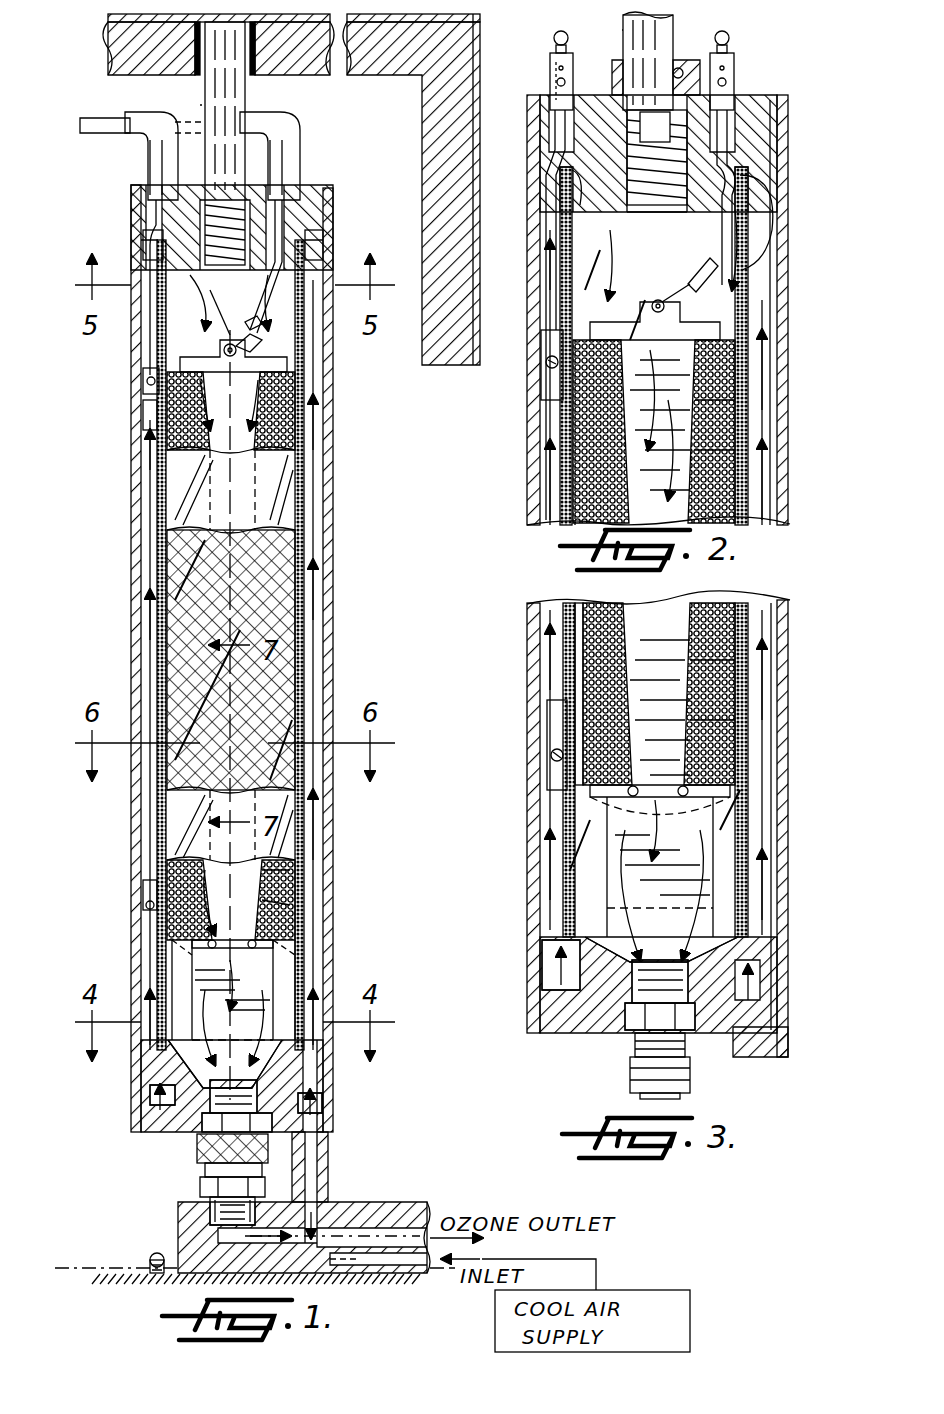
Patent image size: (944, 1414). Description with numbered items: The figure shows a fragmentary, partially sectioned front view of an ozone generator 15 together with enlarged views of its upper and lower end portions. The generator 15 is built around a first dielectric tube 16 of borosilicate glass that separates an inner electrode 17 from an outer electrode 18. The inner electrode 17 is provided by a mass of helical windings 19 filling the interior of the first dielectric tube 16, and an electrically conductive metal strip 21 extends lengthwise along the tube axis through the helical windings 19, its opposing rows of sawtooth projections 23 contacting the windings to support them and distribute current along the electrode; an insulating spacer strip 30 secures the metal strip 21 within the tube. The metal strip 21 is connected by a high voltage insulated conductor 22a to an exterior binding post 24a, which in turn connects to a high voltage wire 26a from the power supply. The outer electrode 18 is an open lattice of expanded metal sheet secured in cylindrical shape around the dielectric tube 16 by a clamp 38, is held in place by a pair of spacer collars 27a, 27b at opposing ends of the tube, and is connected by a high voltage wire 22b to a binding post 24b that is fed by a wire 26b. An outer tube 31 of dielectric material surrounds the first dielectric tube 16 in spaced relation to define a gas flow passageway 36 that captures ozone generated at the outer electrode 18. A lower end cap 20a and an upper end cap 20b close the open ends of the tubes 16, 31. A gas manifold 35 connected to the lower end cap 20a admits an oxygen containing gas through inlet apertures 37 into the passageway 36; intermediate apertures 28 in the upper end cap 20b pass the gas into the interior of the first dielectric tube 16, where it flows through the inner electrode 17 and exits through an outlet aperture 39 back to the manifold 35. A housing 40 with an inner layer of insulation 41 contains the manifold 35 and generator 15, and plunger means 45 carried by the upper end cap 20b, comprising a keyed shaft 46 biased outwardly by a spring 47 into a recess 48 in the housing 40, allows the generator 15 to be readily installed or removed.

In FIG. 1, the ozone generator 15 is at (130, 392).
In FIG. 2, the ozone generator 15 is at (795, 128).
In FIG. 3, the ozone generator 15 is at (797, 608).
In FIG. 1, the first dielectric tube 16 is at (185, 492).
In FIG. 2, the first dielectric tube 16 is at (598, 428).
In FIG. 3, the first dielectric tube 16 is at (600, 657).
In FIG. 1, the inner electrode 17 is at (300, 400).
In FIG. 2, the inner electrode 17 is at (592, 500).
In FIG. 3, the inner electrode 17 is at (742, 642).
In FIG. 1, the outer electrode 18 is at (285, 562).
In FIG. 2, the outer electrode 18 is at (592, 495).
In FIG. 3, the outer electrode 18 is at (578, 728).
In FIG. 1, the helical windings 19 is at (165, 426).
In FIG. 1, the lower end cap 20a is at (152, 1086).
In FIG. 3, the lower end cap 20a is at (762, 952).
In FIG. 1, the upper end cap 20b is at (325, 190).
In FIG. 2, the upper end cap 20b is at (770, 100).
In FIG. 1, the metal strip 21 is at (290, 368).
In FIG. 2, the metal strip 21 is at (725, 336).
In FIG. 1, the high voltage insulated conductor 22a is at (326, 215).
In FIG. 2, the high voltage insulated conductor 22a is at (722, 274).
In FIG. 1, the high voltage wire 22b is at (142, 215).
In FIG. 1, the sawtooth projections 23 is at (272, 900).
In FIG. 2, the sawtooth projections 23 is at (600, 368).
In FIG. 3, the sawtooth projections 23 is at (700, 745).
In FIG. 2, the exterior binding post 24a is at (740, 63).
In FIG. 2, the binding post 24b is at (550, 72).
In FIG. 1, the high voltage wire 26a is at (300, 146).
In FIG. 1, the wire 26b is at (130, 140).
In FIG. 1, the spacer collar 27a is at (300, 968).
In FIG. 3, the spacer collar 27a is at (752, 832).
In FIG. 1, the spacer collar 27b is at (300, 258).
In FIG. 2, the spacer collar 27b is at (760, 248).
In FIG. 1, the intermediate apertures 28 is at (152, 240).
In FIG. 2, the intermediate apertures 28 is at (560, 176).
In FIG. 1, the insulating spacer strip 30 is at (200, 968).
In FIG. 3, the insulating spacer strip 30 is at (742, 882).
In FIG. 1, the outer tube 31 is at (305, 465).
In FIG. 2, the outer tube 31 is at (752, 396).
In FIG. 3, the outer tube 31 is at (548, 830).
In FIG. 1, the gas manifold 35 is at (372, 1206).
In FIG. 1, the gas flow passageway 36 is at (314, 428).
In FIG. 2, the gas flow passageway 36 is at (766, 378).
In FIG. 3, the gas flow passageway 36 is at (768, 697).
In FIG. 1, the inlet apertures 37 is at (160, 1100).
In FIG. 3, the inlet apertures 37 is at (556, 976).
In FIG. 3, the clamp 38 is at (550, 780).
In FIG. 1, the outlet aperture 39 is at (252, 988).
In FIG. 3, the outlet aperture 39 is at (672, 860).
In FIG. 1, the housing 40 is at (125, 18).
In FIG. 1, the inner layer of insulation 41 is at (400, 70).
In FIG. 1, the plunger means 45 is at (200, 105).
In FIG. 2, the plunger means 45 is at (622, 30).
In FIG. 1, the keyed shaft 46 is at (240, 108).
In FIG. 2, the keyed shaft 46 is at (674, 42).
In FIG. 1, the spring 47 is at (262, 278).
In FIG. 2, the spring 47 is at (660, 200).
In FIG. 1, the recess 48 is at (258, 40).